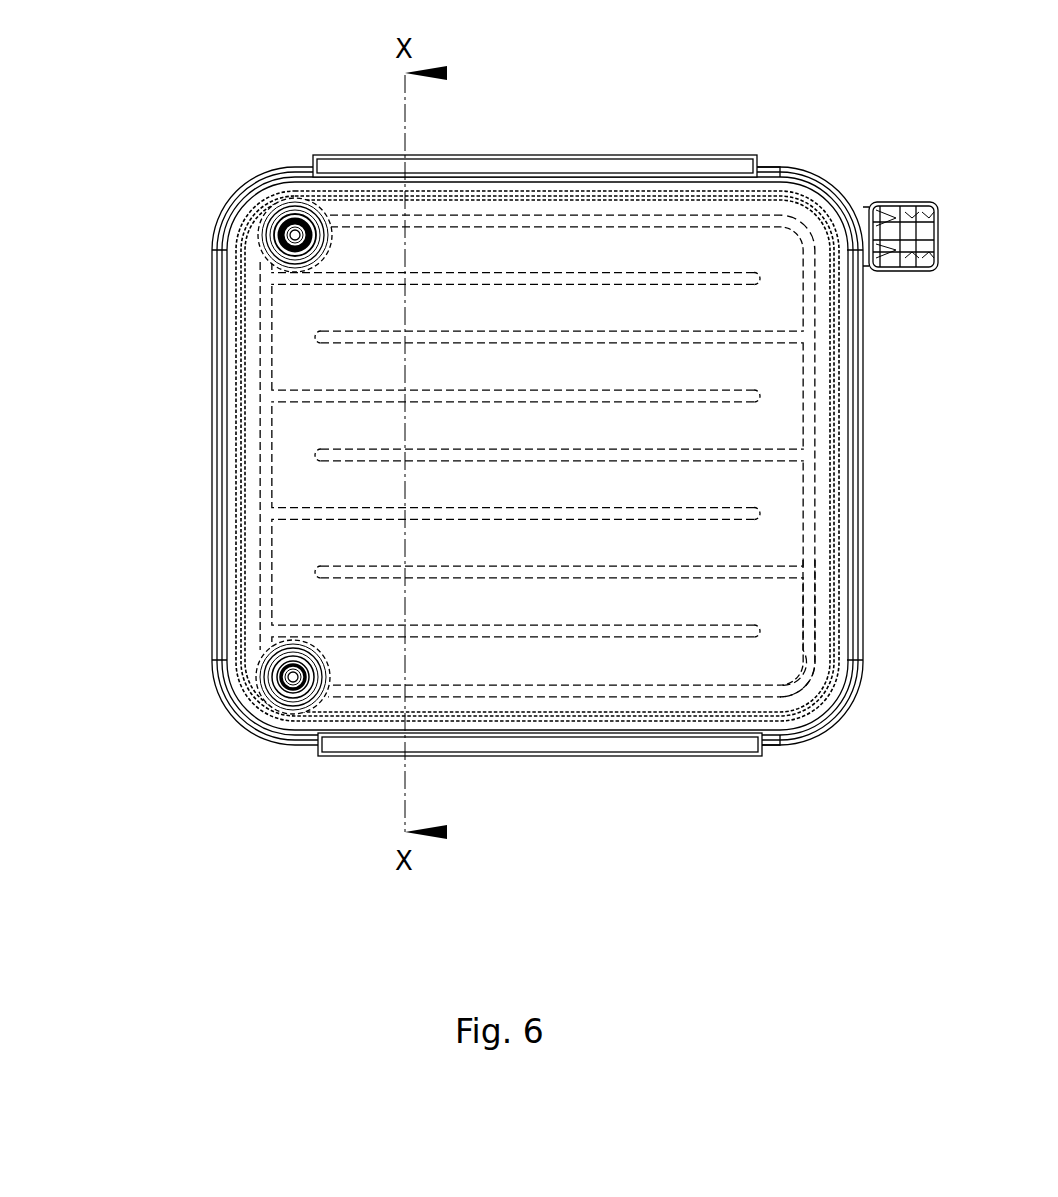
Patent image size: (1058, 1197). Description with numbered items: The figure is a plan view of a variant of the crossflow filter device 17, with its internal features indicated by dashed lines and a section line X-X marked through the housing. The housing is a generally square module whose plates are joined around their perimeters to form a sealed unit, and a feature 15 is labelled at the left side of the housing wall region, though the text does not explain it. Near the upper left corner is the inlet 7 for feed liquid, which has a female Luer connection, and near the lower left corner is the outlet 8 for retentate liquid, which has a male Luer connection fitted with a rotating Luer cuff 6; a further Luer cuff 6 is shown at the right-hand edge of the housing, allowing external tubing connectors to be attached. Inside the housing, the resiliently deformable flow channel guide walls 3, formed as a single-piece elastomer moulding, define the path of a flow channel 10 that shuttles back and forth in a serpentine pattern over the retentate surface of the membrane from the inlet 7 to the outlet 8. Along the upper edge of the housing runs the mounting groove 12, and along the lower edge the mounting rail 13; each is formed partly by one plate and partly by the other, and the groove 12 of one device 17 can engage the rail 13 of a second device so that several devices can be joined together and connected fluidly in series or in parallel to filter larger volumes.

The flow channel guide walls 3 is at (797, 573).
The rotating Luer cuff 6 is at (897, 205).
The inlet 7 is at (270, 697).
The outlet 8 is at (262, 258).
The flow channel 10 is at (595, 459).
The mounting groove 12 is at (523, 156).
The mounting rail 13 is at (548, 753).
The seal 15 is at (236, 573).
The crossflow filter device 17 is at (122, 152).